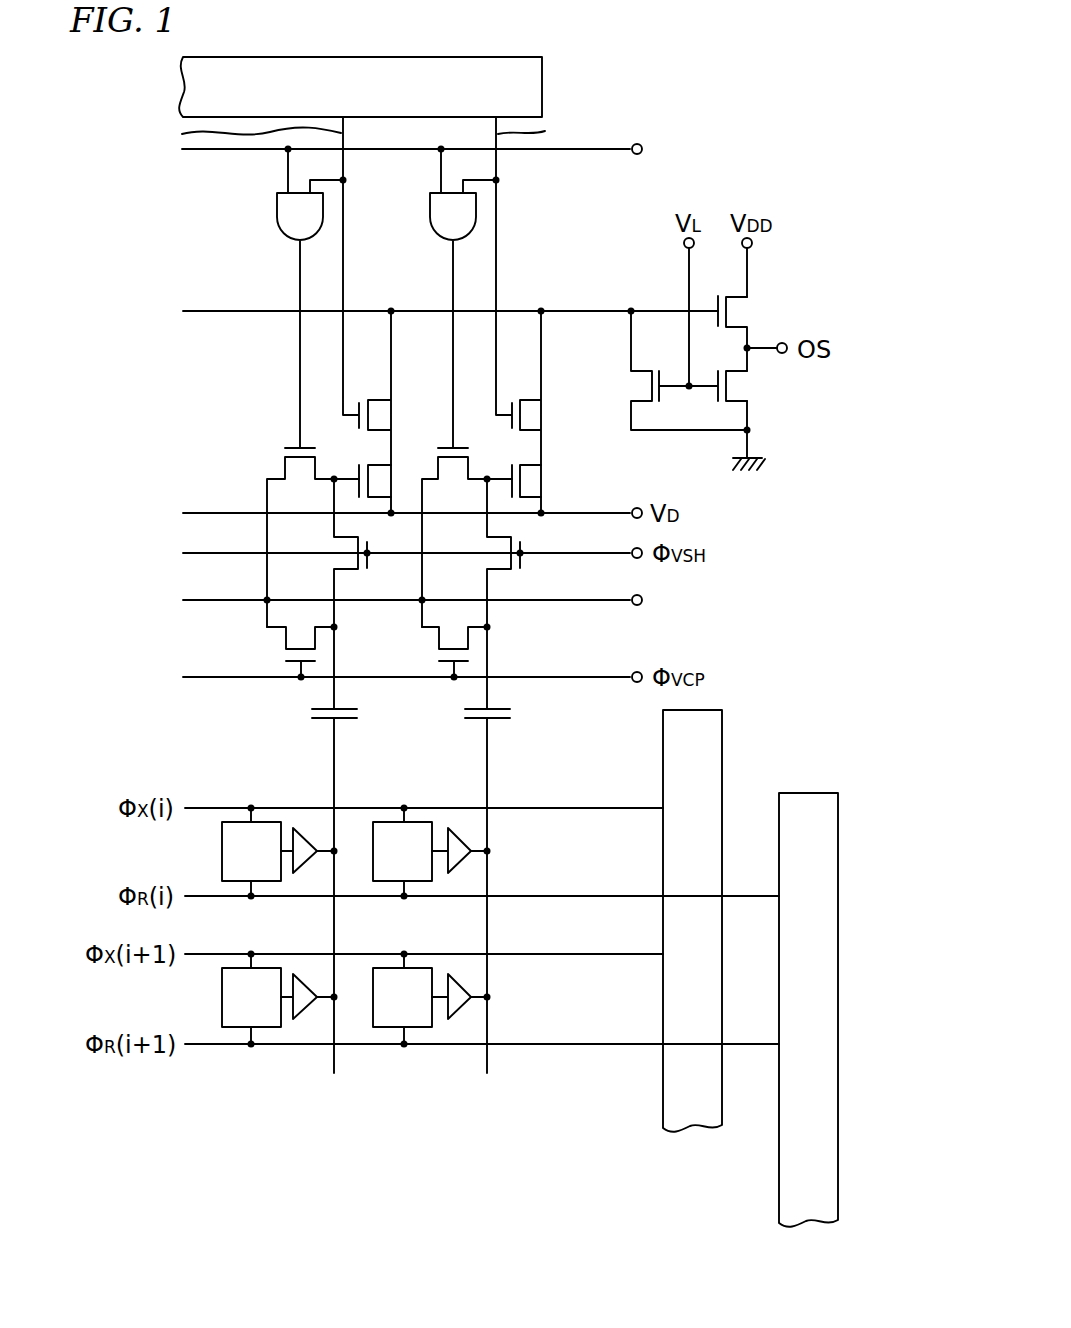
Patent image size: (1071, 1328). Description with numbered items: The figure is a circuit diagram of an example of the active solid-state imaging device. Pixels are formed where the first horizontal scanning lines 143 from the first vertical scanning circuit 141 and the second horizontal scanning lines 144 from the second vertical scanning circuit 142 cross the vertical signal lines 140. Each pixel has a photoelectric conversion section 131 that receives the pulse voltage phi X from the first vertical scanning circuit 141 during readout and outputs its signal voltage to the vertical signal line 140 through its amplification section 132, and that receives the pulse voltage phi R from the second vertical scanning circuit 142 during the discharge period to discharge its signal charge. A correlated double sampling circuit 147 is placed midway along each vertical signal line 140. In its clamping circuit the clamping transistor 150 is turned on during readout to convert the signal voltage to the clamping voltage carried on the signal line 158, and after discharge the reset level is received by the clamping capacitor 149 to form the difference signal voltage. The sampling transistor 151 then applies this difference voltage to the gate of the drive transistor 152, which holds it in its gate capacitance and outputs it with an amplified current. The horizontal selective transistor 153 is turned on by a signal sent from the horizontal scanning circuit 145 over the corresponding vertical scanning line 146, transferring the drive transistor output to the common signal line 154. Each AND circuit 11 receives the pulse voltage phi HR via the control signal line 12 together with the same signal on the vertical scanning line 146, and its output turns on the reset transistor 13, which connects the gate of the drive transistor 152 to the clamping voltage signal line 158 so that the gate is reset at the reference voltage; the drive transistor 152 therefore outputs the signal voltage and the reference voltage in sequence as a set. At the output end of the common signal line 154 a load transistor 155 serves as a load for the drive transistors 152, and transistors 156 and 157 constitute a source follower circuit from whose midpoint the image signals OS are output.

The AND circuit 11 is at (520, 205).
The control signal line 12 is at (613, 146).
The reset transistor 13 is at (447, 445).
The photoelectric conversion section 131 is at (235, 822).
The amplification section 132 is at (303, 828).
The vertical signal line 140 is at (505, 1087).
The first vertical scanning circuit 141 is at (722, 735).
The second vertical scanning circuit 142 is at (838, 793).
The first horizontal scanning line 143 is at (567, 938).
The second horizontal scanning line 144 is at (585, 1062).
The horizontal scanning circuit 145 is at (481, 57).
The vertical scanning line 146 is at (563, 113).
The correlated double sampling (CDS) circuit 147 is at (226, 466).
The clamping capacitor 149 is at (545, 705).
The clamping transistor 150 is at (439, 650).
The sampling transistor 151 is at (522, 552).
The drive transistor 152 is at (522, 480).
The horizontal selective transistor 153 is at (510, 400).
The common signal line 154 is at (527, 308).
The load transistor 155 is at (652, 388).
The source follower transistor 156 is at (733, 305).
The source follower transistor 157 is at (733, 390).
The signal line for the clamping voltage 158 is at (550, 603).